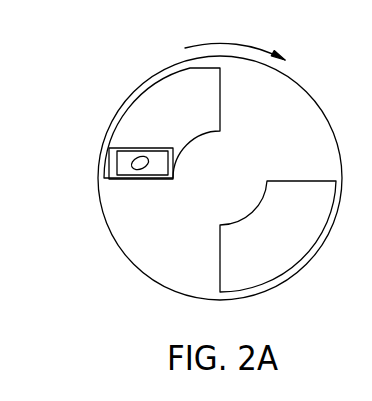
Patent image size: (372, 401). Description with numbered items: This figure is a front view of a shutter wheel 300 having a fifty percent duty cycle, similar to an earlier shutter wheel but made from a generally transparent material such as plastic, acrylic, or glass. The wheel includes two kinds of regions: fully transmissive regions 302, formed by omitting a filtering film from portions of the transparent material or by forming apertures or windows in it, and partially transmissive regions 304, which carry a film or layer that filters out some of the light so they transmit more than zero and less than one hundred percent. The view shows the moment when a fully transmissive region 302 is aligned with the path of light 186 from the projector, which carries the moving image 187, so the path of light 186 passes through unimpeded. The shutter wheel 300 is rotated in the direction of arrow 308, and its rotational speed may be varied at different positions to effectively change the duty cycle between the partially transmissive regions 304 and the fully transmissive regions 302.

The shutter wheel 300 is at (122, 284).
The 100% transmissive region 302 is at (142, 120).
The partially transmissive region 304 is at (291, 112).
The arrow 308 is at (185, 48).
The path of light 186 is at (145, 148).
The moving image 187 is at (147, 169).